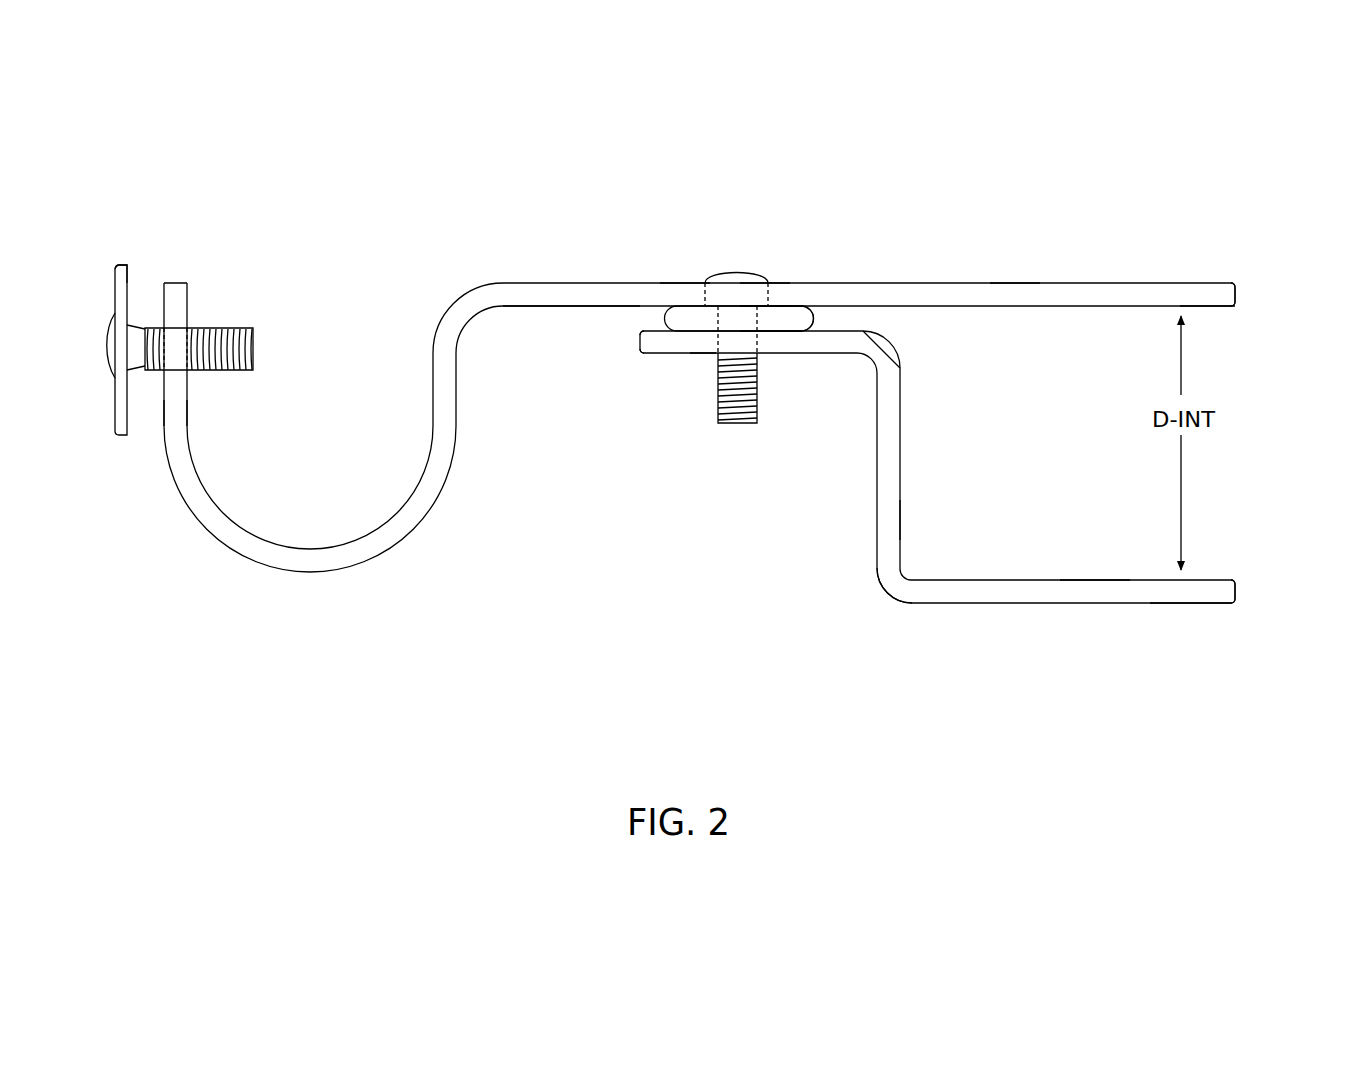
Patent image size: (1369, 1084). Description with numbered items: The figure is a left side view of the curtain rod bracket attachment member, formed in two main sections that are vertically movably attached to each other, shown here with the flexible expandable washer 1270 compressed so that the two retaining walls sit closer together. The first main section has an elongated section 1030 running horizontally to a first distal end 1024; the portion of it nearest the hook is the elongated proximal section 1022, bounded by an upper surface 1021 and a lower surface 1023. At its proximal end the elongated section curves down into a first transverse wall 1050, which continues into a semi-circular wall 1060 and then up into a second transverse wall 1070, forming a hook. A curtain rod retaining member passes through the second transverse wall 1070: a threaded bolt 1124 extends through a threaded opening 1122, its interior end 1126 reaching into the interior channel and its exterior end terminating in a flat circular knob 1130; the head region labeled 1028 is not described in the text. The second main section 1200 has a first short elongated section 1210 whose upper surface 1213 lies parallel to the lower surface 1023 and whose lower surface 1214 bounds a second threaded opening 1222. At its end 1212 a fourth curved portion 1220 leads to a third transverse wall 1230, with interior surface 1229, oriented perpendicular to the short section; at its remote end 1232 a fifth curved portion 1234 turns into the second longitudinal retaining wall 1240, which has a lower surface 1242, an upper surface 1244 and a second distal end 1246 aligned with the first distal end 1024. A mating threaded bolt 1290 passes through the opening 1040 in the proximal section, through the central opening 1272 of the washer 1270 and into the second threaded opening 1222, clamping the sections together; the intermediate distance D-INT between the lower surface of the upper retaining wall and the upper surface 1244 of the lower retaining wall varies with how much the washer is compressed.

The head of anchor bolt 1028 is at (128, 284).
The threaded opening 1122 is at (177, 337).
The threaded bolt 1124 is at (265, 312).
The interior end of the threaded bolt 1126 is at (254, 349).
The flat circular knob 1130 is at (115, 407).
The second transverse wall 1070 is at (143, 440).
The first transverse wall 1050 is at (461, 451).
The semi-circular wall 1060 is at (308, 586).
The elongated proximal section 1022 is at (571, 277).
The lower surface of the longitudinal proximal section 1023 is at (571, 307).
The upper surface of the longitudinal proximal section 1021 is at (683, 283).
The elongated section 1030 is at (1010, 278).
The first distal end 1024 is at (1237, 292).
The flexible expandable washer 1270 is at (680, 312).
The central opening in the flexible expandable washer 1272 is at (750, 318).
The opening 1040 is at (763, 300).
The mating threaded bolt 1290 is at (735, 282).
The second threaded opening 1222 is at (752, 341).
The second main section 1200 is at (935, 498).
The first short elongated section 1210 is at (663, 354).
The end of the first short elongated section 1212 is at (886, 331).
The upper surface of the first short elongated section 1213 is at (640, 353).
The lower surface of the first short elongated section 1214 is at (640, 331).
The fourth curved portion 1220 is at (900, 361).
The interior surface of the third transverse wall 1229 is at (905, 520).
The third transverse wall 1230 is at (914, 460).
The end of the third transverse wall 1232 is at (902, 565).
The fifth curved portion 1234 is at (882, 596).
The second longitudinal retaining wall 1240 is at (1055, 607).
The lower surface of the second longitudinal retaining wall 1242 is at (1183, 604).
The upper surface of the second longitudinal retaining wall 1244 is at (1097, 579).
The second distal end 1246 is at (1237, 592).